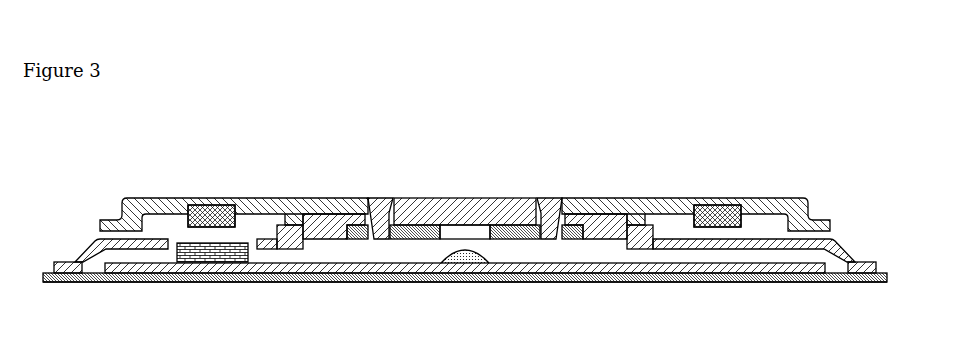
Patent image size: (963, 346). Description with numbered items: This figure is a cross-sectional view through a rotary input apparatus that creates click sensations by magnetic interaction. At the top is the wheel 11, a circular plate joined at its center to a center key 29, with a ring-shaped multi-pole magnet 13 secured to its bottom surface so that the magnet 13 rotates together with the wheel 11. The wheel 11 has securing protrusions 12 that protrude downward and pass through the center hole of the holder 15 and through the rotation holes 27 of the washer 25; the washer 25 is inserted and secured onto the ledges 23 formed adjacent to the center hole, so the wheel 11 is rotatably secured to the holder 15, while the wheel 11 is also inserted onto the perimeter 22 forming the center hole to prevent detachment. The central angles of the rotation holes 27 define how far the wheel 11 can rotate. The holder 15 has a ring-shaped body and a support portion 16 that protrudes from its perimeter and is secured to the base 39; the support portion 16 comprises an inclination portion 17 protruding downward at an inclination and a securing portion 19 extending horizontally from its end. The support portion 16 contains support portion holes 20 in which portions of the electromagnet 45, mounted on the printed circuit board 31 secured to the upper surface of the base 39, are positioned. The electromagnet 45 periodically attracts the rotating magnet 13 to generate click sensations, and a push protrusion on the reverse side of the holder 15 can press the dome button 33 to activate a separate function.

The wheel 11 is at (143, 197).
The securing protrusions 12 is at (384, 240).
The magnet 13 is at (219, 204).
The holder 15 is at (315, 224).
The support portion 16 is at (827, 239).
The inclination portion 17 is at (96, 237).
The securing portion 19 is at (62, 261).
The support portion holes 20 is at (181, 242).
The perimeter 22 is at (295, 212).
The ledges 23 is at (352, 240).
The washer 25 is at (440, 224).
The rotation holes 27 is at (372, 216).
The center key 29 is at (465, 197).
The printed circuit board 31 is at (598, 283).
The dome button 33 is at (465, 264).
The base 39 is at (100, 283).
The electromagnet 45 is at (218, 274).